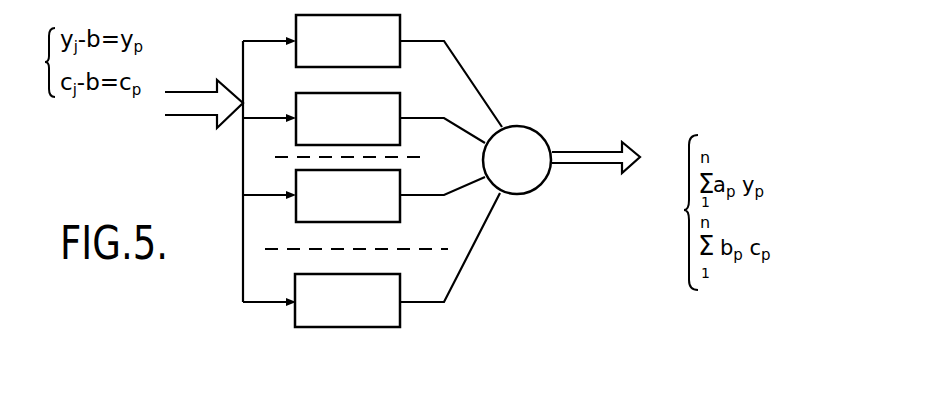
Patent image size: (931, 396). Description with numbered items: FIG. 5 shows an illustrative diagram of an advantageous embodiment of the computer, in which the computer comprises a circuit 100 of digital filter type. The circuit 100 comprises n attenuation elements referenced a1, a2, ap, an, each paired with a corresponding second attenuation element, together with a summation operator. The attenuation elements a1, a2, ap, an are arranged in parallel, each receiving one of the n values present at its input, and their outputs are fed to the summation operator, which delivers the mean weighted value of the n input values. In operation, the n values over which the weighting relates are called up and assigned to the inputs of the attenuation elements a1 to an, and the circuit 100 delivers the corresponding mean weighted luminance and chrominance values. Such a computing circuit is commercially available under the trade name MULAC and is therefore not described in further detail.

The circuit of digital filter type 100 is at (467, 73).
The attenuation element a1 is at (362, 37).
The attenuation element a2 is at (362, 115).
The attenuation element ap is at (362, 192).
The attenuation element an is at (362, 296).